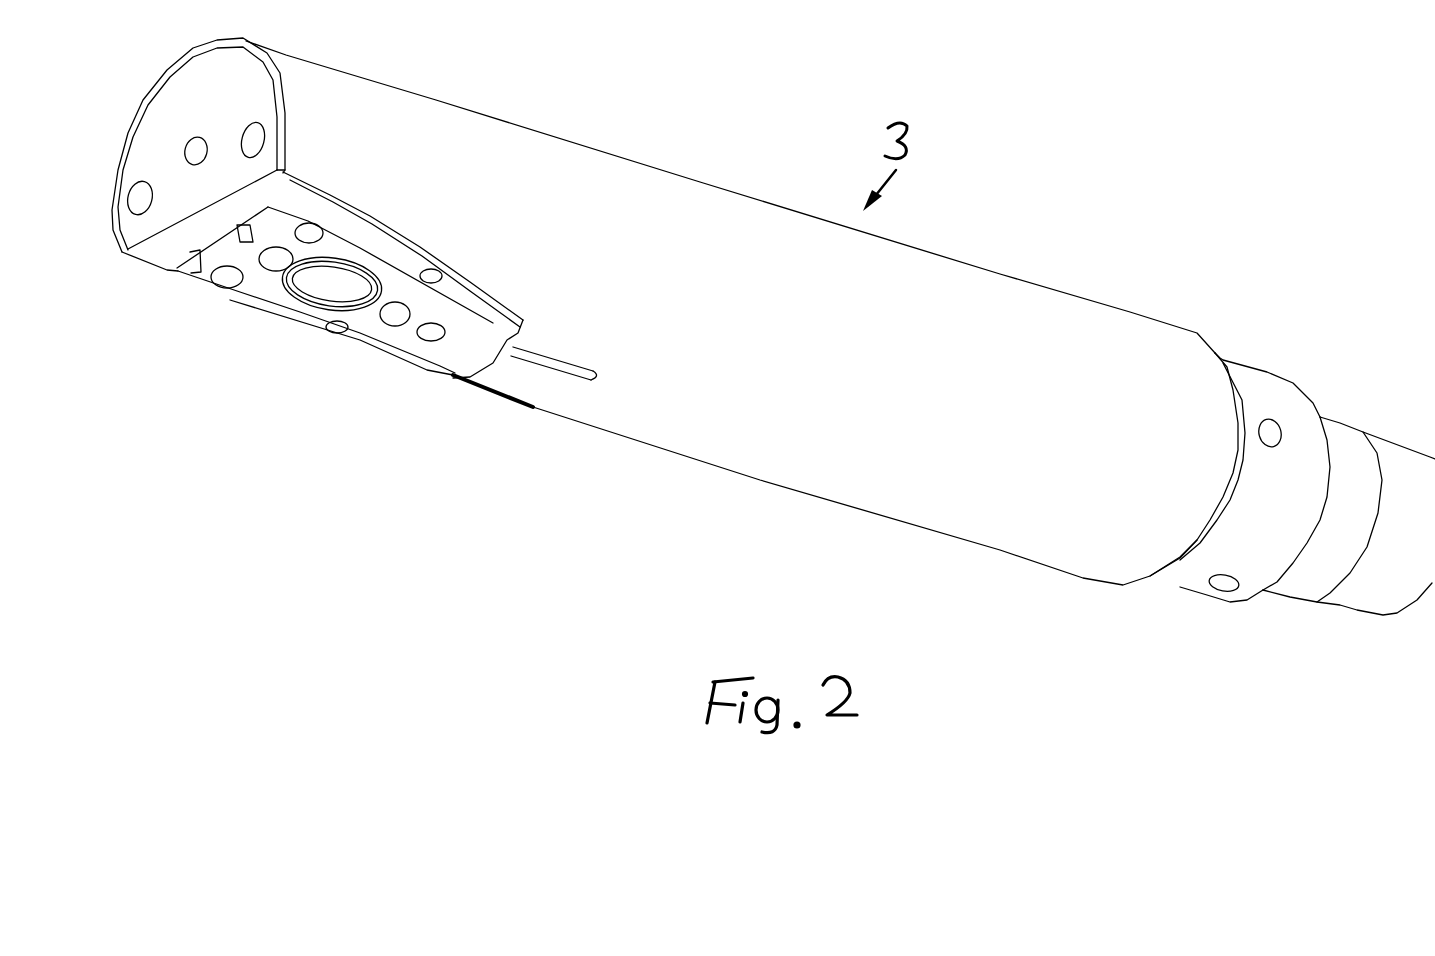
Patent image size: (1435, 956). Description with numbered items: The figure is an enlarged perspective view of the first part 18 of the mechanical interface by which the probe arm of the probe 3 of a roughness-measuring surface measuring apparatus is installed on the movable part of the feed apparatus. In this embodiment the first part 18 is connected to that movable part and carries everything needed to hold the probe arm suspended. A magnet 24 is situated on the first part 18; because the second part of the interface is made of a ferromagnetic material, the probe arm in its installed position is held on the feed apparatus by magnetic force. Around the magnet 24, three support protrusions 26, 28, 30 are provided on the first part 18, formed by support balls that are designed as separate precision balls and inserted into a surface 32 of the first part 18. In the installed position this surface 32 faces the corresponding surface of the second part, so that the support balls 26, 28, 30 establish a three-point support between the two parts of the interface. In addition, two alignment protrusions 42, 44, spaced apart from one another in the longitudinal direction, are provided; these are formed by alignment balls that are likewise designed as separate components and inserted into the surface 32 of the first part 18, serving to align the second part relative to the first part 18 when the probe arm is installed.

The probe 3 is at (773, 326).
The first part 18 is at (397, 347).
The magnet 24 is at (323, 293).
The support protrusion 26 is at (231, 278).
The support protrusion 28 is at (312, 233).
The support protrusion 30 is at (440, 330).
The surface 32 is at (278, 237).
The alignment protrusion 42 is at (277, 263).
The alignment protrusion 44 is at (397, 317).